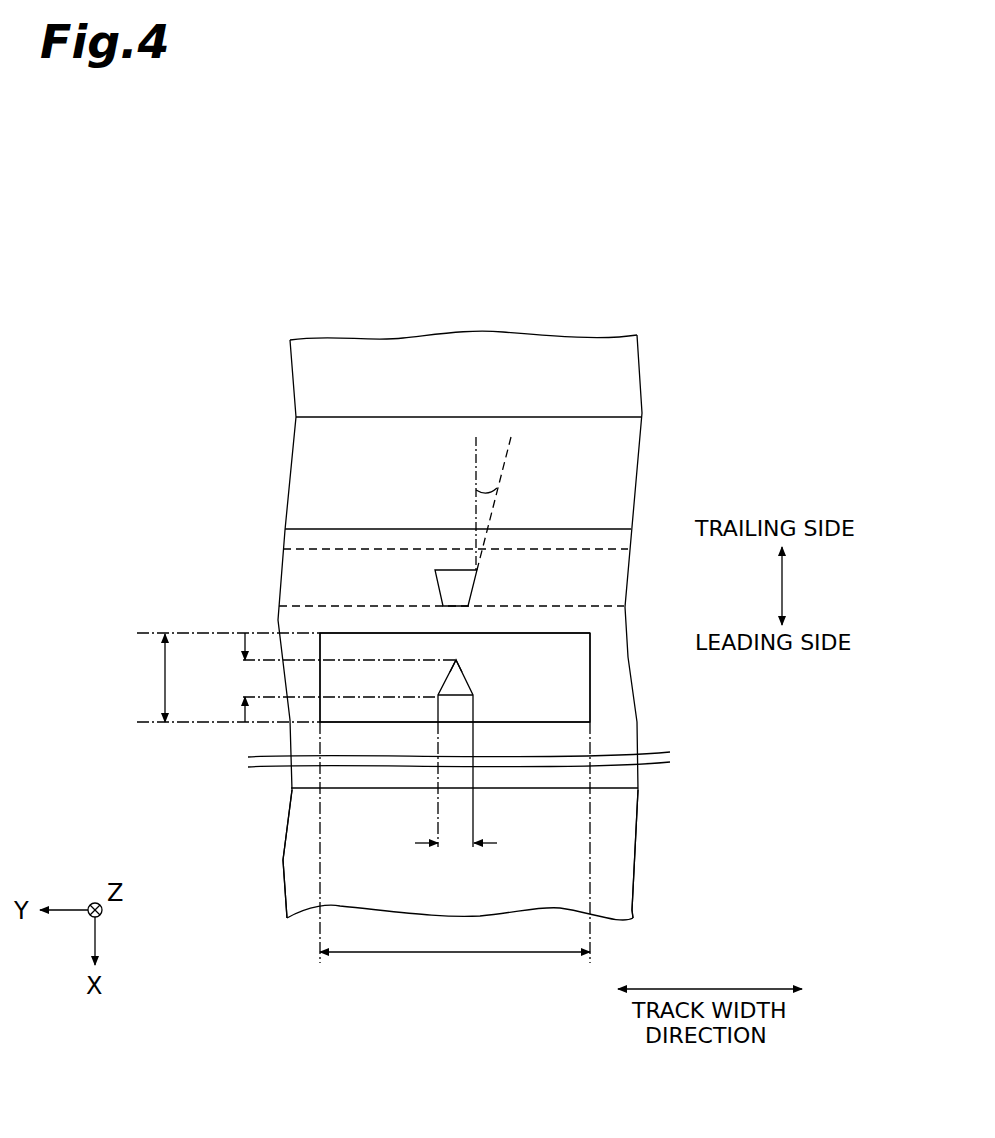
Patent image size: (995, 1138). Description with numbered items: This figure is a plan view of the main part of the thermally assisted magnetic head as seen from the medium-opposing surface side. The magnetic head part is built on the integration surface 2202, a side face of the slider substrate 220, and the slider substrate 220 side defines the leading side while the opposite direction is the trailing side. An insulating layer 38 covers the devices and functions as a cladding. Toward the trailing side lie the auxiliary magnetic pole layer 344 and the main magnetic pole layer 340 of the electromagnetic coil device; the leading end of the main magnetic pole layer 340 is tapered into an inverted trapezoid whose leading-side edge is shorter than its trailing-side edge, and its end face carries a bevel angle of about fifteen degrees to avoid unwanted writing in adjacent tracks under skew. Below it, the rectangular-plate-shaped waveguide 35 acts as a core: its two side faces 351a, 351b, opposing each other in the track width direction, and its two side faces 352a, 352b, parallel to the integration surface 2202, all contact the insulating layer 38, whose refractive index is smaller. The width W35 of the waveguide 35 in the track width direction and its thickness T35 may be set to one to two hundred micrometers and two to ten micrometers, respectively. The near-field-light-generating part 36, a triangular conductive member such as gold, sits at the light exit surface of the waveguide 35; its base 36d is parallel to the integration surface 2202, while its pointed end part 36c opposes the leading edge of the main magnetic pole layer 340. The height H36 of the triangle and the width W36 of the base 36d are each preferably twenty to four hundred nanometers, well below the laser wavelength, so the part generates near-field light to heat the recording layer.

The insulating layer 38 is at (628, 387).
The auxiliary magnetic pole layer 344 is at (322, 472).
The main magnetic pole layer 340 is at (452, 587).
The waveguide 35 is at (553, 622).
The side face 352a is at (352, 625).
The side face 352b is at (357, 723).
The side face 351a is at (318, 647).
The side face 351b is at (592, 642).
The near-field-light-generating part 36 is at (457, 680).
The pointed end part 36c is at (458, 651).
The base 36d is at (455, 697).
The integration surface 2202 is at (311, 788).
The slider substrate 220 is at (607, 843).
The thickness of the waveguide T35 is at (139, 678).
The height of the triangle H36 is at (216, 677).
The width of the base W36 is at (456, 861).
The width of the waveguide W35 is at (455, 937).